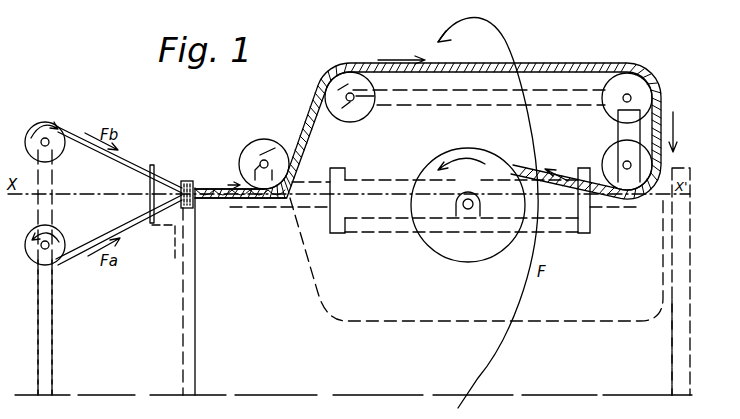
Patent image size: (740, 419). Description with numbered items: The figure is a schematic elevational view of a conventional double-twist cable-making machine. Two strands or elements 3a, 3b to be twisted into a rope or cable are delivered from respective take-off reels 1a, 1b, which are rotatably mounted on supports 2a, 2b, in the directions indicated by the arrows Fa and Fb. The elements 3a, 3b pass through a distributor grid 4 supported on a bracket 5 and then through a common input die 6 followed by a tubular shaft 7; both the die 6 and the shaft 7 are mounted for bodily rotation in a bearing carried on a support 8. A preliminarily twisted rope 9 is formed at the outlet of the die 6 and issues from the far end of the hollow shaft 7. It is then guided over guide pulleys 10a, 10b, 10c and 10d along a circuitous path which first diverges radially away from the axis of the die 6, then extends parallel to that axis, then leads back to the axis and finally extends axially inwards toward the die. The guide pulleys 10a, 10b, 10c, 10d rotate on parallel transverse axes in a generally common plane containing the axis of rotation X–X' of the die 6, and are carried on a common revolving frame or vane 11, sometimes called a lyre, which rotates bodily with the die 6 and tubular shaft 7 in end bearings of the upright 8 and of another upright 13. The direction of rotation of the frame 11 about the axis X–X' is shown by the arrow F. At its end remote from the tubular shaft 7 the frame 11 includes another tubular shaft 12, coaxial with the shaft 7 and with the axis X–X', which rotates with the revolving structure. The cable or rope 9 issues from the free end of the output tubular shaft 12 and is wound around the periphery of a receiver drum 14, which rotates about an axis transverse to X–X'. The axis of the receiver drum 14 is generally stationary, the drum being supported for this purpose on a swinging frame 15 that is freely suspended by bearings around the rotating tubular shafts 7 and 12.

The take-off reel 1a is at (57, 262).
The take-off reel 1b is at (58, 123).
The support 2a is at (50, 350).
The support 2b is at (50, 182).
The element 3a is at (128, 224).
The element 3b is at (140, 163).
The distributor grid 4 is at (148, 194).
The bracket 5 is at (176, 258).
The common input die 6 is at (197, 182).
The tubular shaft 7 is at (228, 204).
The support 8 is at (191, 346).
The rope 9 is at (522, 158).
The guide pulley 10a is at (268, 147).
The guide pulley 10b is at (358, 119).
The guide pulley 10c is at (616, 110).
The guide pulley 10d is at (612, 155).
The revolving frame 11 is at (477, 106).
The tubular shaft 12 is at (611, 203).
The upright 13 is at (674, 347).
The receiver drum 14 is at (432, 161).
The swinging frame 15 is at (395, 230).